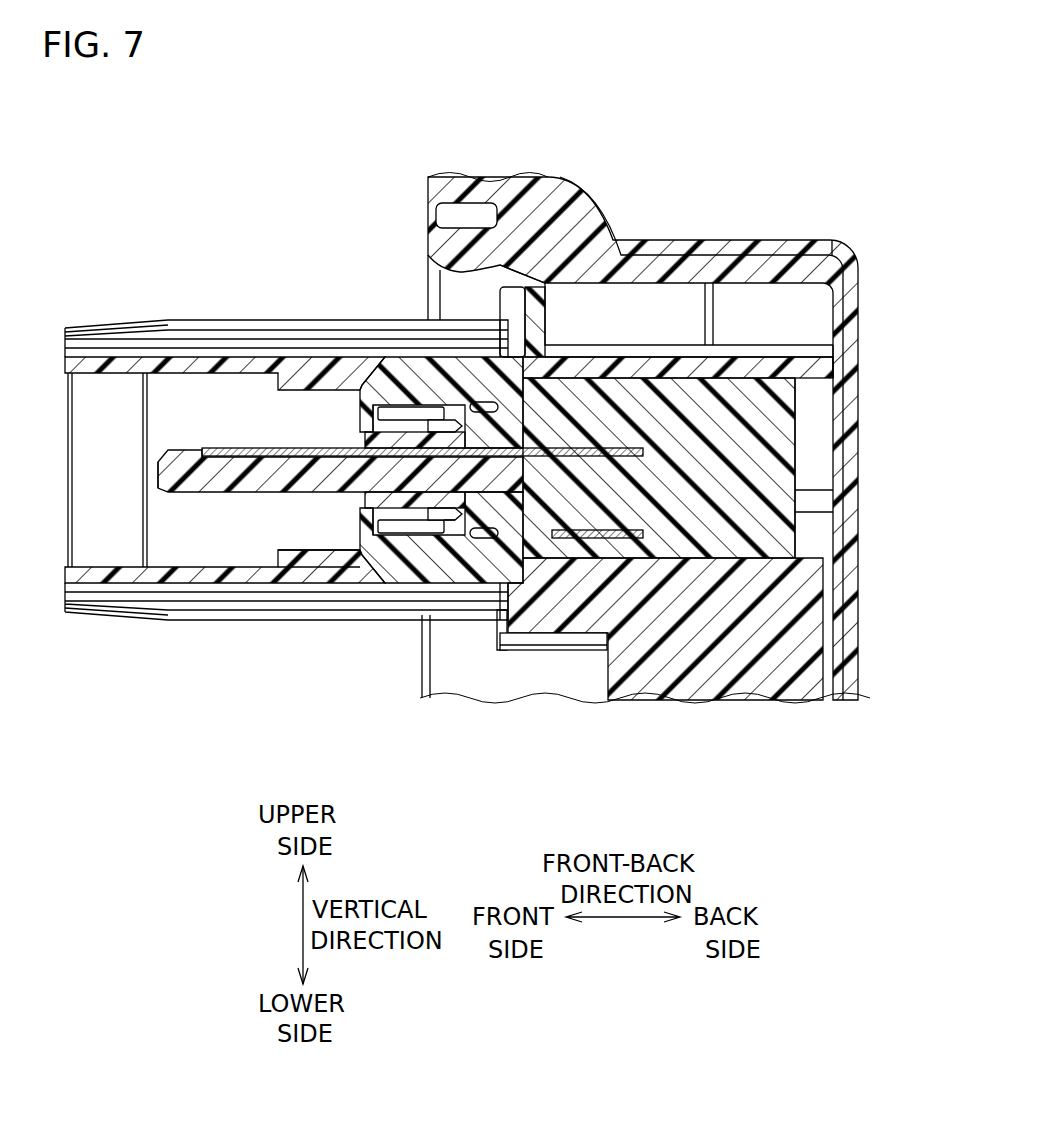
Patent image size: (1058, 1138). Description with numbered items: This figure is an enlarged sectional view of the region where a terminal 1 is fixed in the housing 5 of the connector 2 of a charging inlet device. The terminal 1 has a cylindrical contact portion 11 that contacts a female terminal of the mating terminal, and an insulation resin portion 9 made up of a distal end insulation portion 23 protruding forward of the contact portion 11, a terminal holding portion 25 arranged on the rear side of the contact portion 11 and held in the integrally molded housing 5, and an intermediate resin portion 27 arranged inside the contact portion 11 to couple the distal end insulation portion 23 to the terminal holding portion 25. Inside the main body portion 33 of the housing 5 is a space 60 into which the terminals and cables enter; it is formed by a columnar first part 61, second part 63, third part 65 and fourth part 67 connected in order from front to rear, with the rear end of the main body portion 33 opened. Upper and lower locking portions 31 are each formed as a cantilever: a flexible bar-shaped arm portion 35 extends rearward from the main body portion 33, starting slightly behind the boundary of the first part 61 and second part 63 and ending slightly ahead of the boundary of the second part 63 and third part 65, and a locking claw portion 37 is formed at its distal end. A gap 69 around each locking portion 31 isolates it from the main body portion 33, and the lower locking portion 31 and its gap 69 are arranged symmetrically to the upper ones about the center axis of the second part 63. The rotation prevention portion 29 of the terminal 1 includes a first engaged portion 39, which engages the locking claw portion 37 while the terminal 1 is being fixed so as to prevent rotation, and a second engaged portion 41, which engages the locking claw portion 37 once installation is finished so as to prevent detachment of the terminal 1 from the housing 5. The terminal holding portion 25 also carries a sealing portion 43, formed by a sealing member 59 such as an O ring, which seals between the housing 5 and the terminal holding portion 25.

The terminal 1 is at (213, 496).
The connector 2 is at (766, 160).
The housing 5 is at (205, 320).
The insulation resin portion 9 is at (260, 492).
The contact portion 11 is at (318, 448).
The distal end insulation portion 23 is at (163, 491).
The terminal holding portion 25 is at (556, 540).
The intermediate resin portion 27 is at (330, 492).
The rotation prevention portion 29 is at (397, 412).
The locking portion 31 is at (437, 707).
The main body portion 33 is at (152, 320).
The arm portion 35 is at (440, 418).
The locking claw portion 37 is at (510, 378).
The first engaged portion 39 is at (382, 410).
The second engaged portion 41 is at (470, 450).
The sealing portion 43 is at (507, 388).
The sealing member 59 is at (503, 407).
The space 60 is at (325, 562).
The first part 61 is at (305, 548).
The second part 63 is at (440, 520).
The third part 65 is at (586, 560).
The fourth part 67 is at (765, 540).
The gap 69 is at (452, 425).